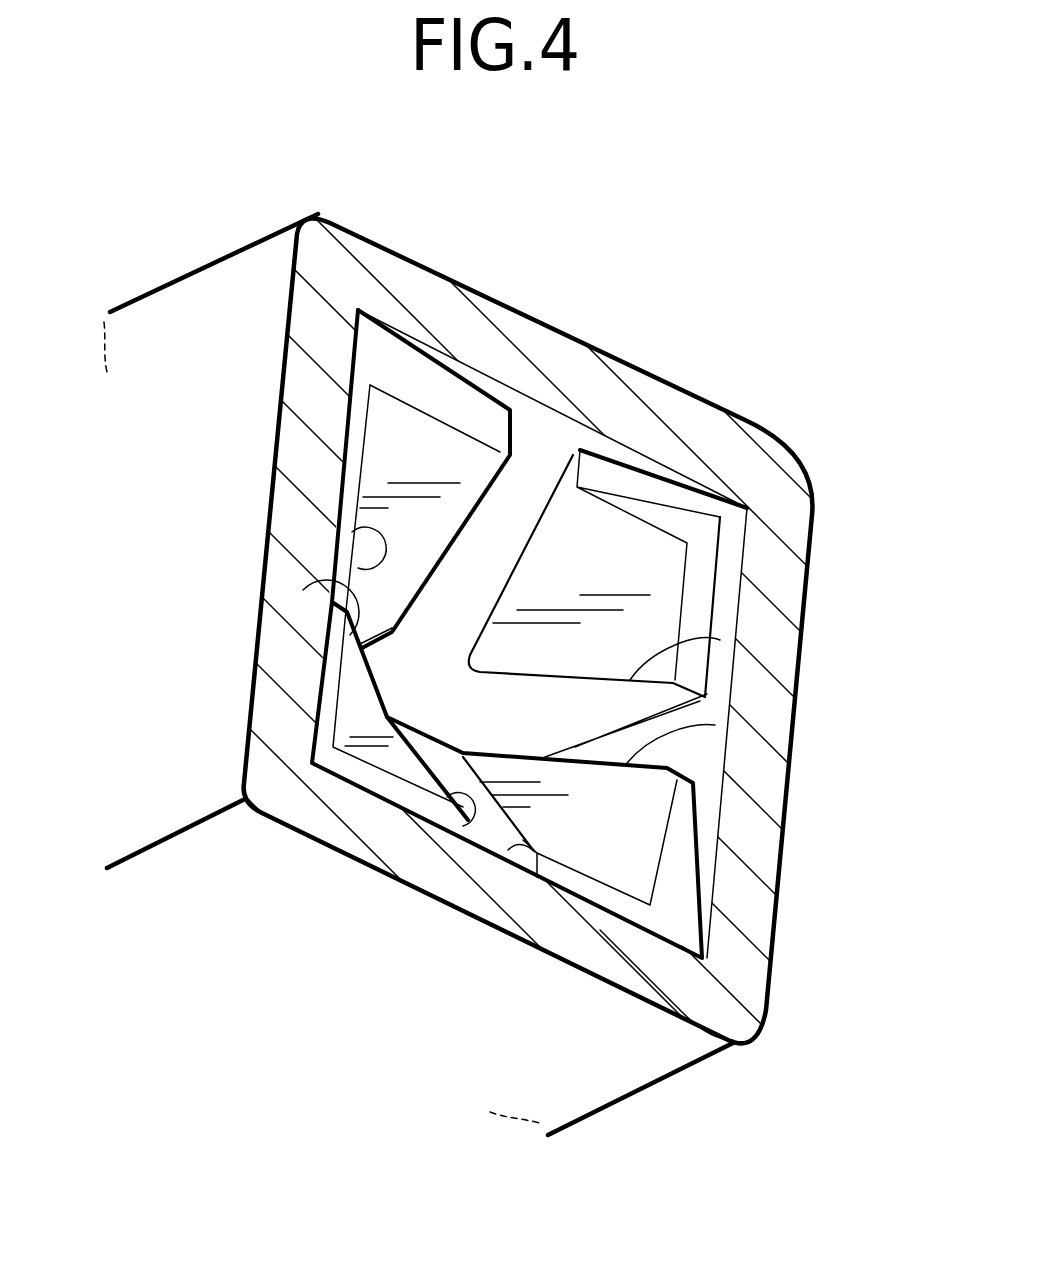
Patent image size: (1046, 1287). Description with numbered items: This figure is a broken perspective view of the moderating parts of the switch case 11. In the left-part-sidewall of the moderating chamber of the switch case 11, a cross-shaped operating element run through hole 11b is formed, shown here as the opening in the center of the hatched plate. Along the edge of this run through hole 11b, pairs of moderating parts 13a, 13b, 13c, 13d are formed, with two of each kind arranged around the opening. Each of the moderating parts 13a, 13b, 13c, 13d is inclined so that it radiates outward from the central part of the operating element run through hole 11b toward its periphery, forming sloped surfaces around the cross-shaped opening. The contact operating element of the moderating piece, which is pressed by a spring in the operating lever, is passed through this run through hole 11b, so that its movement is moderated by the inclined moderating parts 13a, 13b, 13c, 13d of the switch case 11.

The switch case 11 is at (393, 243).
The operating element run through hole 11b is at (577, 425).
The moderating part 13a is at (560, 425).
The moderating part 13b is at (483, 790).
The moderating part 13c is at (630, 680).
The moderating part 13d is at (385, 522).